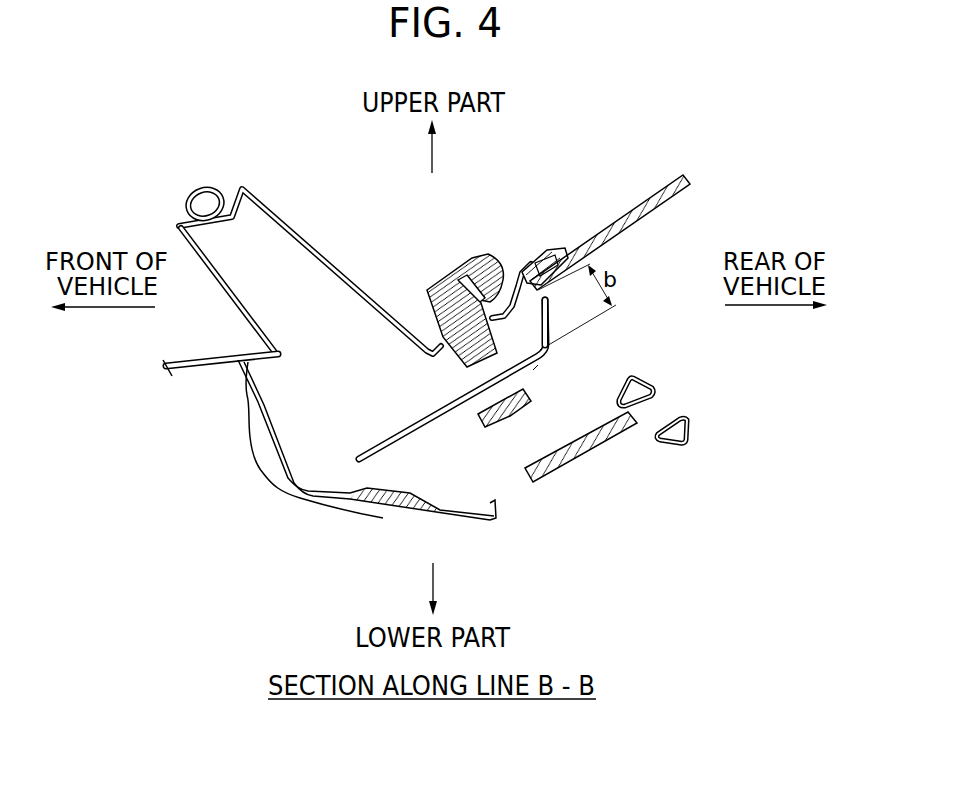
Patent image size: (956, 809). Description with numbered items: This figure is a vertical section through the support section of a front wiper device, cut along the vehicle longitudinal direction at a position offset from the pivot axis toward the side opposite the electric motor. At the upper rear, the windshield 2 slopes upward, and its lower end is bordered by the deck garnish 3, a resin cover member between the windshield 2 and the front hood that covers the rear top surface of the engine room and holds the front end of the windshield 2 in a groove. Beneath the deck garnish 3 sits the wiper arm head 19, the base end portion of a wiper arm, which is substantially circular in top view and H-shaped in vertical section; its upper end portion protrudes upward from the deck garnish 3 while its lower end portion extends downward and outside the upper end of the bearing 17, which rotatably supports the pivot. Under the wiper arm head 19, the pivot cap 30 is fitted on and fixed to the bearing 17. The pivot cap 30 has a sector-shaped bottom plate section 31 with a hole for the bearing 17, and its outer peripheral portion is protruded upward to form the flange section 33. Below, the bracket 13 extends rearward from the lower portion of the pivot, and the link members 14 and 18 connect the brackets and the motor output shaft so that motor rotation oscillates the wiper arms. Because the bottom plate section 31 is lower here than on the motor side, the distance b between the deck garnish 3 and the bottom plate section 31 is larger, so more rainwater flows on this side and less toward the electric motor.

The windshield 2 is at (623, 211).
The deck garnish 3 is at (517, 264).
The bracket 13 is at (574, 461).
The link member 14 is at (641, 376).
The bearing 17 is at (478, 421).
The link member 18 is at (689, 418).
The wiper arm head 19 is at (427, 312).
The pivot cap 30 is at (533, 370).
The bottom plate section 31 is at (408, 427).
The flange section 33 is at (548, 300).